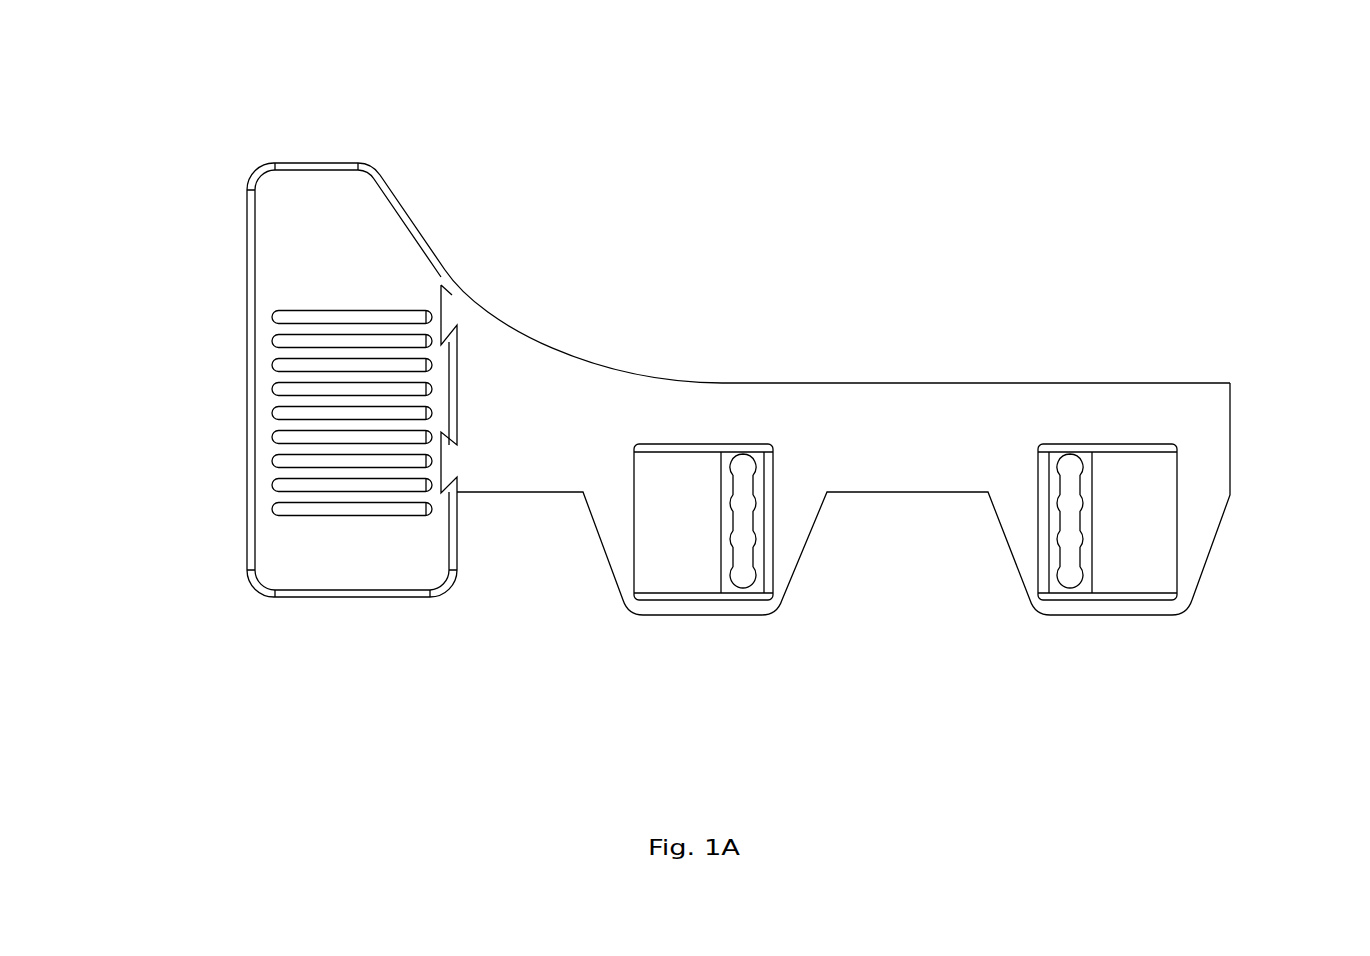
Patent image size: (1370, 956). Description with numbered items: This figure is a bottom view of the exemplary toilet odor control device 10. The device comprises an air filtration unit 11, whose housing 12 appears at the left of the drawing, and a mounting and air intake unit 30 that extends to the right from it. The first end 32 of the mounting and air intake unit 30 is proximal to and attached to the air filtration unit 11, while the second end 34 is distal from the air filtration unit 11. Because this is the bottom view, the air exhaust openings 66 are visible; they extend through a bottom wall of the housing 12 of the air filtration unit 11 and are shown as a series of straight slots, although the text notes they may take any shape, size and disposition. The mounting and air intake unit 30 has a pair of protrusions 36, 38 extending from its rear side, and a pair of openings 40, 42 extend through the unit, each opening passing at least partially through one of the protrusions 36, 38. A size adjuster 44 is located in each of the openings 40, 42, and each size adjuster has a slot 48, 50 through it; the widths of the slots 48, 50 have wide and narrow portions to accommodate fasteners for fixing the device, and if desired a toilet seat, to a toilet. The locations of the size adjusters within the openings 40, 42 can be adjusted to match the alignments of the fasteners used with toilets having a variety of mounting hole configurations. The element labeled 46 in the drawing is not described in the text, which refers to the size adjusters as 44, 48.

The toilet odor control device 10 is at (238, 67).
The air filtration unit 11 is at (391, 259).
The housing 12 is at (357, 598).
The air exhaust openings 66 is at (295, 341).
The first end 32 is at (457, 540).
The mounting and air intake unit 30 is at (880, 410).
The second end 34 is at (1231, 440).
The protrusion 36 is at (678, 605).
The opening 40 is at (660, 560).
The size adjuster 44 is at (755, 558).
The slot 48 is at (742, 575).
The protrusion 38 is at (1163, 608).
The opening 42 is at (1113, 570).
The second clip rail 46 is at (1057, 558).
The slot 50 is at (1072, 562).